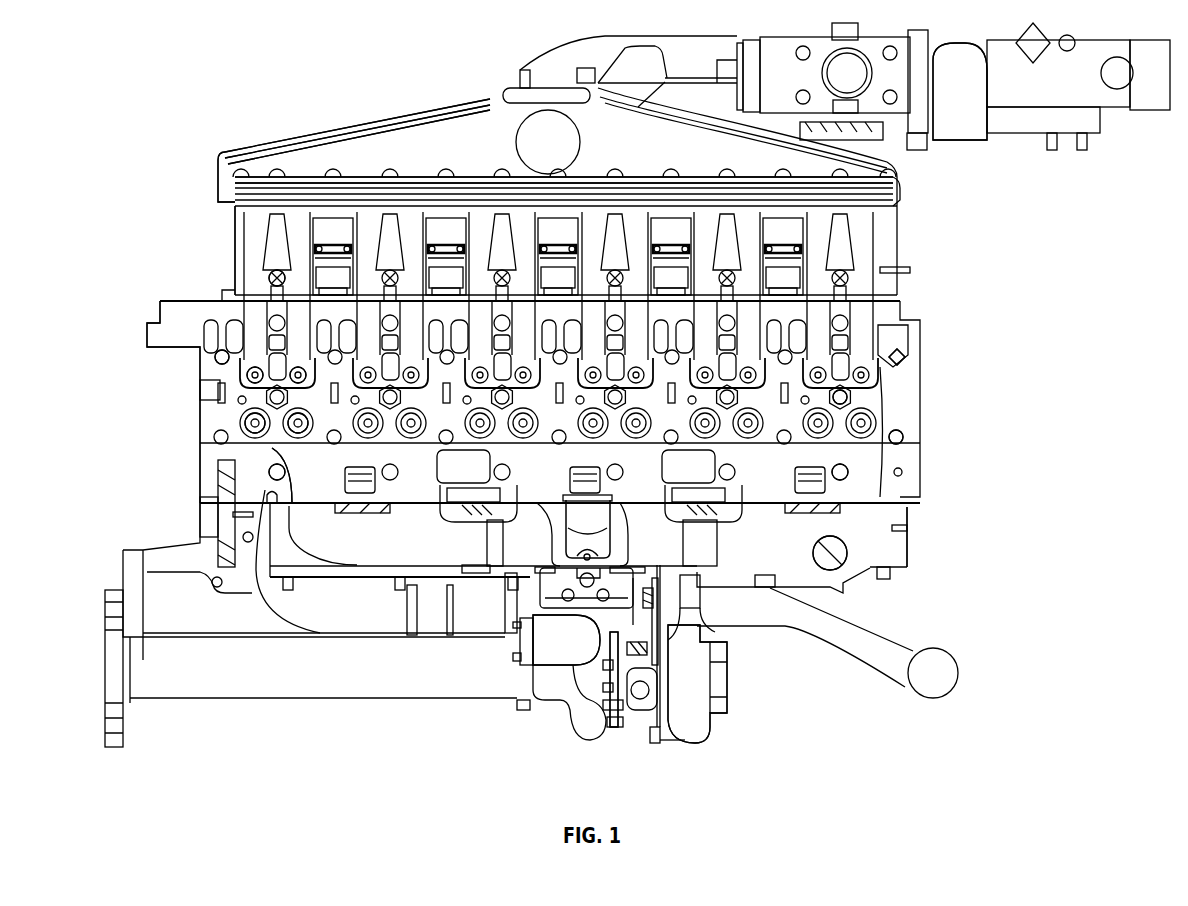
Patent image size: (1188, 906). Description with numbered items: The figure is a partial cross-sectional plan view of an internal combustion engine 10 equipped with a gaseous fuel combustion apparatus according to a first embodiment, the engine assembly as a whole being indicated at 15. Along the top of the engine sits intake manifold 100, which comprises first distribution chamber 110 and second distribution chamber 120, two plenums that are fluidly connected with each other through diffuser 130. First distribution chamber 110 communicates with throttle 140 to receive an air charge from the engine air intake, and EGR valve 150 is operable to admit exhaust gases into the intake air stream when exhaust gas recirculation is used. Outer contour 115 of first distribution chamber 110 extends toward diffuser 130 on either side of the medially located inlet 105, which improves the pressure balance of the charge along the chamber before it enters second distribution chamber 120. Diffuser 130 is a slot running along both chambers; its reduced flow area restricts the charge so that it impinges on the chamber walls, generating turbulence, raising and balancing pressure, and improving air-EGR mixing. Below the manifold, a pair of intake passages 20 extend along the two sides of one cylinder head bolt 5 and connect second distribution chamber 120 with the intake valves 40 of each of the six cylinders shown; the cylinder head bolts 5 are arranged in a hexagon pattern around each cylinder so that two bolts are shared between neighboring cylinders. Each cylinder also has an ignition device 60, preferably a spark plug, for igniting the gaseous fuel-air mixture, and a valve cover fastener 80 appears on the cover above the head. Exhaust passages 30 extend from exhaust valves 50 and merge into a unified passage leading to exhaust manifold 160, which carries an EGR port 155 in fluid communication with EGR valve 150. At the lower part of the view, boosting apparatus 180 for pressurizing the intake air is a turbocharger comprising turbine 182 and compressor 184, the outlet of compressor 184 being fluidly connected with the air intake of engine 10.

The engine 10 is at (95, 124).
The engine 15 is at (114, 240).
The intake passages 20 is at (280, 303).
The exhaust passages 30 is at (296, 457).
The intake valves 40 is at (290, 378).
The exhaust valves 50 is at (293, 423).
The ignition device 60 is at (848, 391).
The cylinder head bolt 5 is at (842, 467).
The valve cover bolt 80 is at (279, 269).
The intake manifold 100 is at (337, 121).
The inlet 105 is at (545, 130).
The first distribution chamber 110 is at (406, 148).
The outer contour 115 is at (300, 137).
The second distribution chamber 120 is at (291, 198).
The diffuser 130 is at (238, 182).
The throttle 140 is at (962, 126).
The EGR valve 150 is at (801, 51).
The EGR port 155 is at (833, 555).
The exhaust manifold 160 is at (890, 550).
The boosting apparatus 180 is at (540, 760).
The turbine 182 is at (568, 735).
The compressor 184 is at (700, 735).